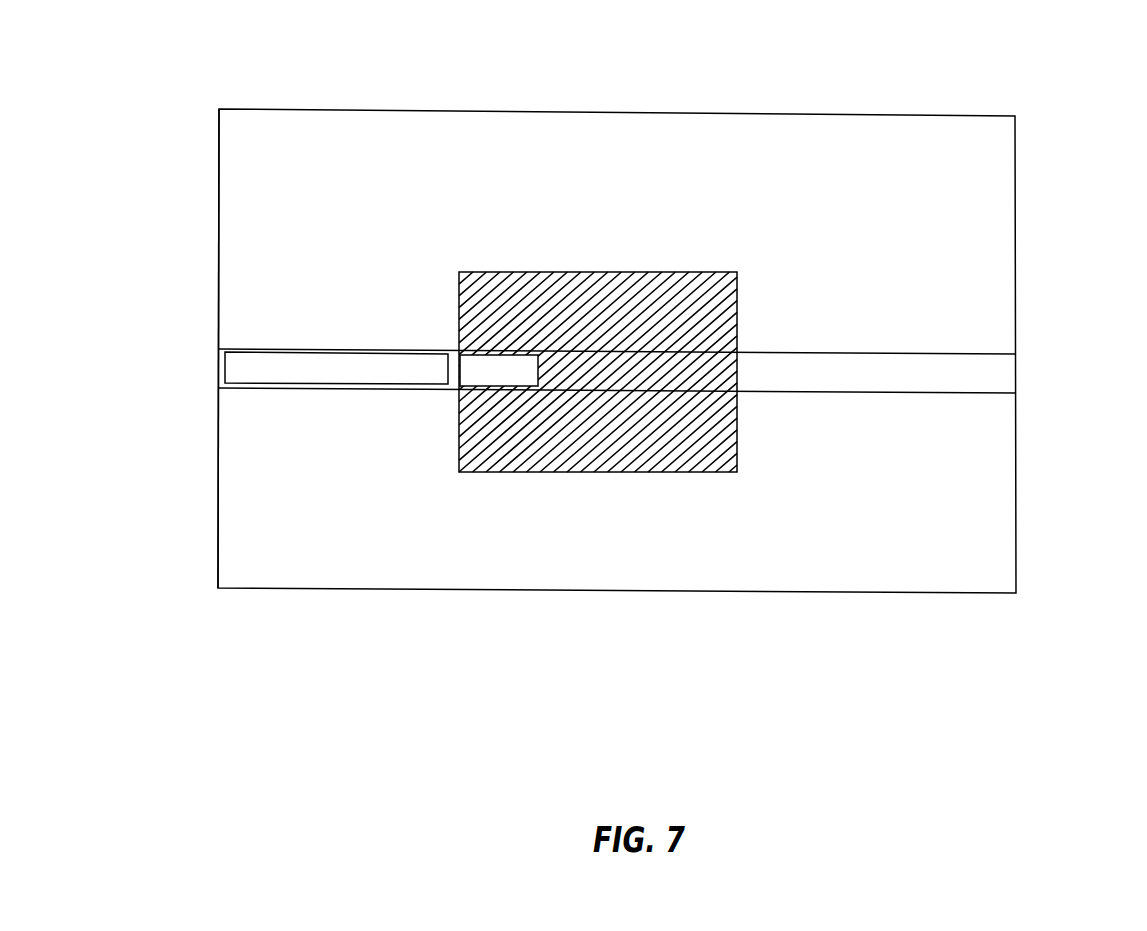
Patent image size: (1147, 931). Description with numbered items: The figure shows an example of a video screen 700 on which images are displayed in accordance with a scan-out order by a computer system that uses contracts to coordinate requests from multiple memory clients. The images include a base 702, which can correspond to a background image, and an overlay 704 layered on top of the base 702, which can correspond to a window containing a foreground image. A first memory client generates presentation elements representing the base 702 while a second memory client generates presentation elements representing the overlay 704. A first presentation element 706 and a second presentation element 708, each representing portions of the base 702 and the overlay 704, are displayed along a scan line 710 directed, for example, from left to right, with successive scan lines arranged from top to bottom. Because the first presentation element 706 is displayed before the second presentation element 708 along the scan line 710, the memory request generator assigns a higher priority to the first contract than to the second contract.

The video screen 700 is at (935, 116).
The base 702 is at (238, 190).
The overlay 704 is at (487, 448).
The first presentation element 706 is at (313, 363).
The second presentation element 708 is at (483, 368).
The scan line 710 is at (996, 383).